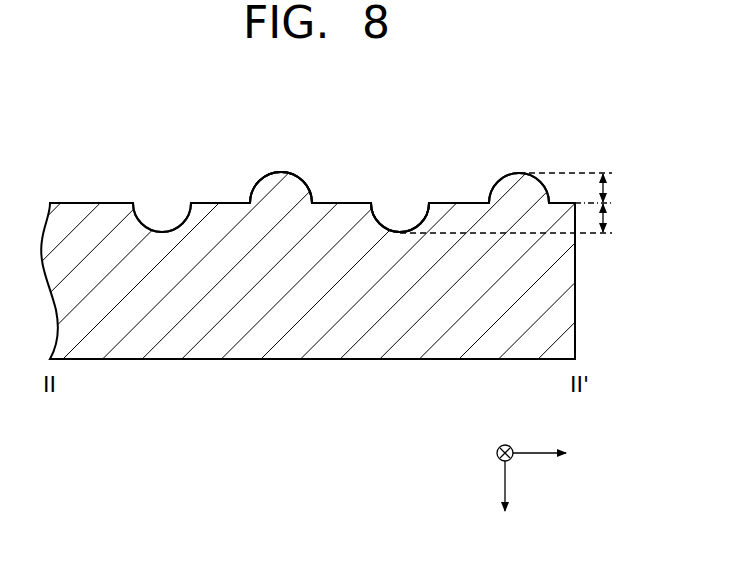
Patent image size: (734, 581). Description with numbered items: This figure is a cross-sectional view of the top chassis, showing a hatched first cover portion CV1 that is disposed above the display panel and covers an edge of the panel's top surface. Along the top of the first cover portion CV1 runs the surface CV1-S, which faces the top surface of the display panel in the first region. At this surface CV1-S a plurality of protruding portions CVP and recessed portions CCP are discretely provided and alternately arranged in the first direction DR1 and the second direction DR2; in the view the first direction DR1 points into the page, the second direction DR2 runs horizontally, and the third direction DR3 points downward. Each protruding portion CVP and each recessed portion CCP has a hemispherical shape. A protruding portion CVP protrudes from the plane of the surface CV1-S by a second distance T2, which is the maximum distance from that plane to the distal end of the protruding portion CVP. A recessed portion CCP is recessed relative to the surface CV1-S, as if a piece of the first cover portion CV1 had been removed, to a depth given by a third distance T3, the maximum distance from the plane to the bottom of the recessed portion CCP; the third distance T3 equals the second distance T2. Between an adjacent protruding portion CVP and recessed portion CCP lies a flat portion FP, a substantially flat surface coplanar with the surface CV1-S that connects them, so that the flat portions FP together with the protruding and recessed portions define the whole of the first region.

The first cover portion CV1 is at (560, 281).
The surface CV1-S is at (90, 200).
The protruding portion CVP is at (282, 171).
The recessed portion CCP is at (420, 226).
The flat portion FP is at (460, 203).
The second distance T2 is at (577, 188).
The third distance T3 is at (517, 218).
The first direction DR1 is at (505, 438).
The second direction DR2 is at (559, 453).
The third direction DR3 is at (505, 499).